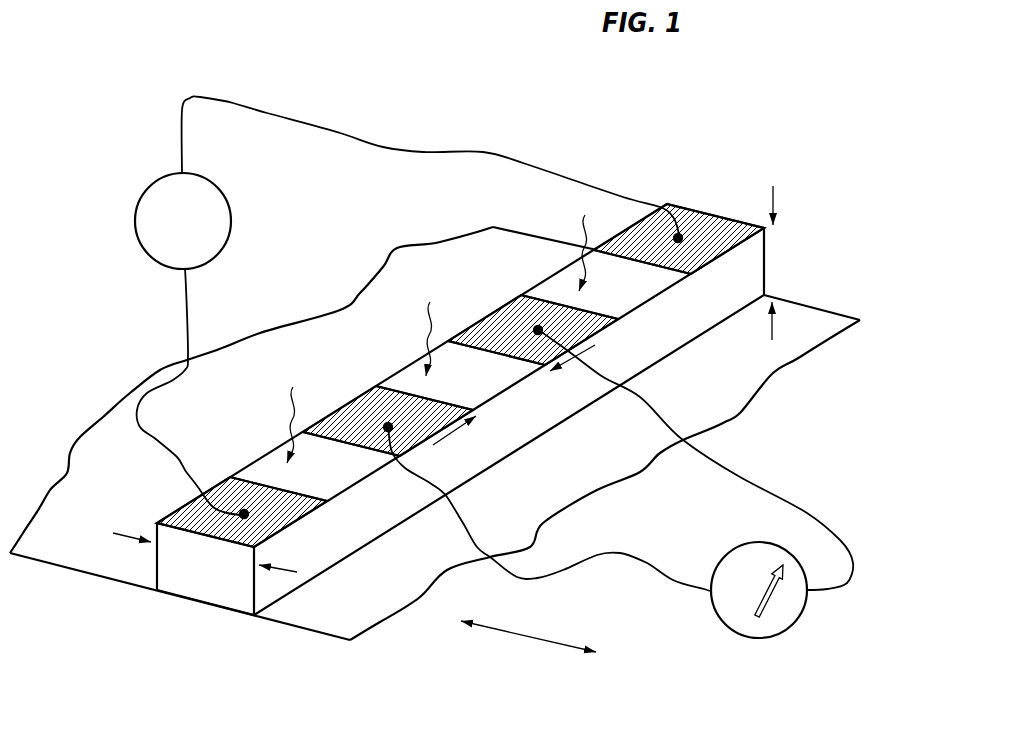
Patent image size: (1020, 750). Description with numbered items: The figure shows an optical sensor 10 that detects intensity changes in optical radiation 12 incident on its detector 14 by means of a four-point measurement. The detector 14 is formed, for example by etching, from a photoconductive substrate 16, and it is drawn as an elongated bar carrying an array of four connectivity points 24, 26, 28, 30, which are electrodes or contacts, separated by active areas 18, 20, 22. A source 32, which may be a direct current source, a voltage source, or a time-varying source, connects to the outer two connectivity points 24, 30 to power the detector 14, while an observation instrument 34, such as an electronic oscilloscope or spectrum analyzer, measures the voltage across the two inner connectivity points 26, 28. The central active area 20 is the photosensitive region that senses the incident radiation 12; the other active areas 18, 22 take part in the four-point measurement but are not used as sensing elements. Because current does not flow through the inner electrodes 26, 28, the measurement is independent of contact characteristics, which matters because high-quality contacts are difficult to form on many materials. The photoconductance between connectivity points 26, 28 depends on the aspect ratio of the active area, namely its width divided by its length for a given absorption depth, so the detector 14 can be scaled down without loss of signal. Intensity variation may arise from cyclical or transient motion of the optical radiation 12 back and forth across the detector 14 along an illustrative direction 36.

The optical sensor 10 is at (133, 35).
The optical radiation 12 is at (287, 403).
The detector 14 is at (200, 585).
The photoconductive substrate 16 is at (347, 613).
The active area 18 is at (260, 470).
The active area 20 is at (410, 383).
The active area 22 is at (553, 293).
The connectivity point 24 is at (185, 518).
The connectivity point 26 is at (368, 407).
The connectivity point 28 is at (496, 315).
The connectivity point 30 is at (675, 207).
The source 32 is at (196, 250).
The observation instrument 34 is at (783, 630).
The direction 36 is at (530, 640).